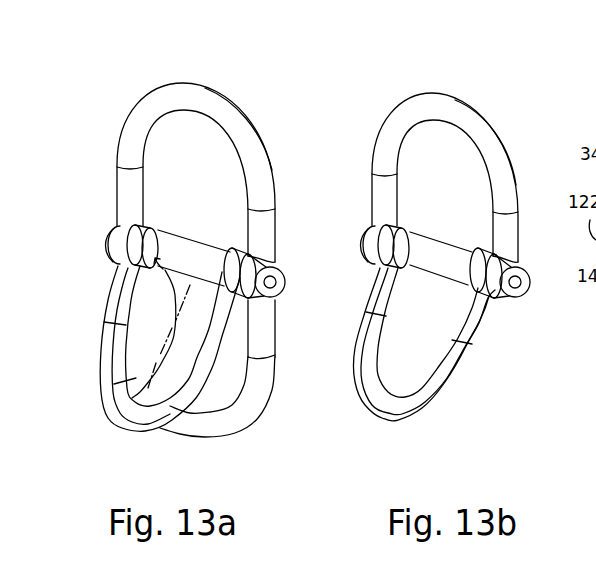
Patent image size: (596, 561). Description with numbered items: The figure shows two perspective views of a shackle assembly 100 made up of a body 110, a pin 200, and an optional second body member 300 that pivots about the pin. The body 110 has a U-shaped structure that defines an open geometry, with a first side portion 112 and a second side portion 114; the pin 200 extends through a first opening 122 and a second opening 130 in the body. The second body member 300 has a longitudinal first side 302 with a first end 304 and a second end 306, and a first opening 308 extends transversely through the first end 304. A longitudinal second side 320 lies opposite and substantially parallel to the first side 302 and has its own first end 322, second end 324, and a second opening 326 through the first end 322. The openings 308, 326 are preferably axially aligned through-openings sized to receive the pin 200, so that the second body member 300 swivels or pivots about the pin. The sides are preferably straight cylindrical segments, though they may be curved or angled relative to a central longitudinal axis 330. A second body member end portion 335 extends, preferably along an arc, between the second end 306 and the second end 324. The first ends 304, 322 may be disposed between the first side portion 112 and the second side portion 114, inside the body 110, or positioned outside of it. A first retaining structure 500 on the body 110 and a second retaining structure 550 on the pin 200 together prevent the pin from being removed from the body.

In FIG. 13A, the shackle assembly 100 is at (215, 48).
In FIG. 13B, the shackle assembly 100 is at (476, 48).
In FIG. 13A, the body 110 is at (190, 173).
In FIG. 13B, the body 110 is at (477, 137).
In FIG. 13A, the first side portion 112 is at (120, 181).
In FIG. 13A, the second side portion 114 is at (256, 222).
In FIG. 13B, the first opening 122 is at (356, 222).
In FIG. 13B, the second opening 130 is at (542, 288).
In FIG. 13A, the pin 200 is at (208, 270).
In FIG. 13B, the pin 200 is at (455, 270).
In FIG. 13A, the second body member 300 is at (170, 440).
In FIG. 13B, the second body member 300 is at (440, 414).
In FIG. 13A, the first side 302 is at (140, 290).
In FIG. 13A, the first end 304 is at (133, 260).
In FIG. 13A, the second end 306 is at (146, 318).
In FIG. 13A, the first opening 308 is at (132, 319).
In FIG. 13A, the second side 320 is at (255, 350).
In FIG. 13A, the first end 322 is at (240, 286).
In FIG. 13A, the second end 324 is at (238, 376).
In FIG. 13A, the second opening 326 is at (226, 242).
In FIG. 13A, the central longitudinal axis 330 is at (118, 440).
In FIG. 13A, the second body member end portion 335 is at (110, 388).
In FIG. 13A, the first retaining structure 500 is at (102, 201).
In FIG. 13A, the second retaining structure 550 is at (92, 218).